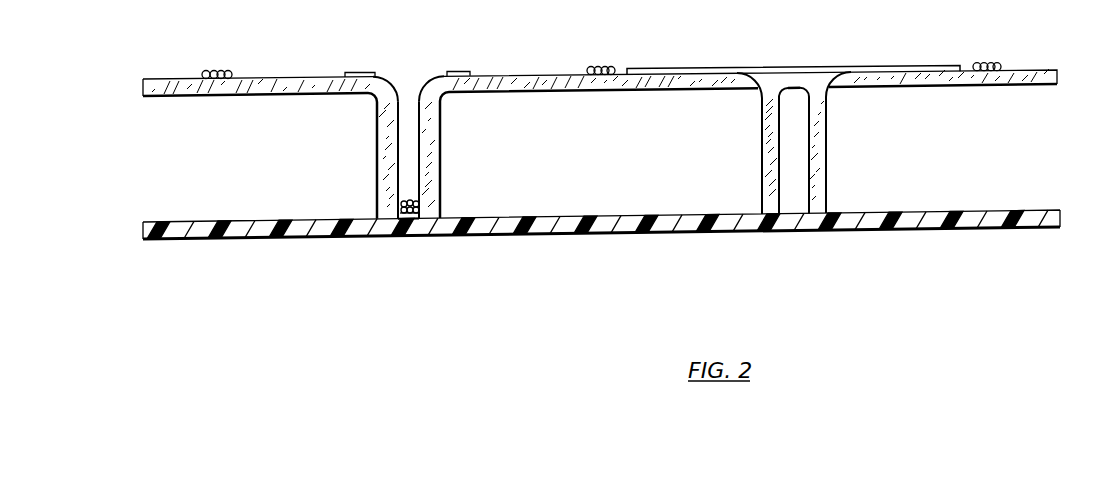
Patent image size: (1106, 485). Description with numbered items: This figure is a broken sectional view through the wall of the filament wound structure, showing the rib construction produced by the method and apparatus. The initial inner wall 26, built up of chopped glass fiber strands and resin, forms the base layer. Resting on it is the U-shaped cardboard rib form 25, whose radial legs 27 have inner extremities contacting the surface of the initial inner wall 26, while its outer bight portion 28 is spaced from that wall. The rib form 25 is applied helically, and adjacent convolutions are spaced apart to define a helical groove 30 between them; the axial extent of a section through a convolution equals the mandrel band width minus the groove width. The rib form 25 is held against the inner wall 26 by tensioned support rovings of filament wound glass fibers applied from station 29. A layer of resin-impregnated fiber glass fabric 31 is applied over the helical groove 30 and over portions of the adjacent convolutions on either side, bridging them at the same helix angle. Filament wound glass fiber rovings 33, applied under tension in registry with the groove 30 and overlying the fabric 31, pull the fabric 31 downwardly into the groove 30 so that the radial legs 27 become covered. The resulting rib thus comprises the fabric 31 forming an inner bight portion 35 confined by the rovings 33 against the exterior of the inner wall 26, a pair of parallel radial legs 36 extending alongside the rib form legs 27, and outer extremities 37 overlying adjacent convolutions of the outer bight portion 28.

The rib form 25 is at (613, 126).
The initial inner wall 26 is at (797, 215).
The radial legs 27 is at (838, 143).
The outer bight portion 28 is at (954, 79).
The support rovings station 29 is at (997, 62).
The helical groove 30 is at (793, 150).
The fiber glass fabric 31 is at (860, 66).
The filament wound glass fiber rovings 33 is at (406, 200).
The inner bight portion 35 is at (415, 214).
The radial legs 36 is at (461, 133).
The outer extremities 37 is at (432, 72).